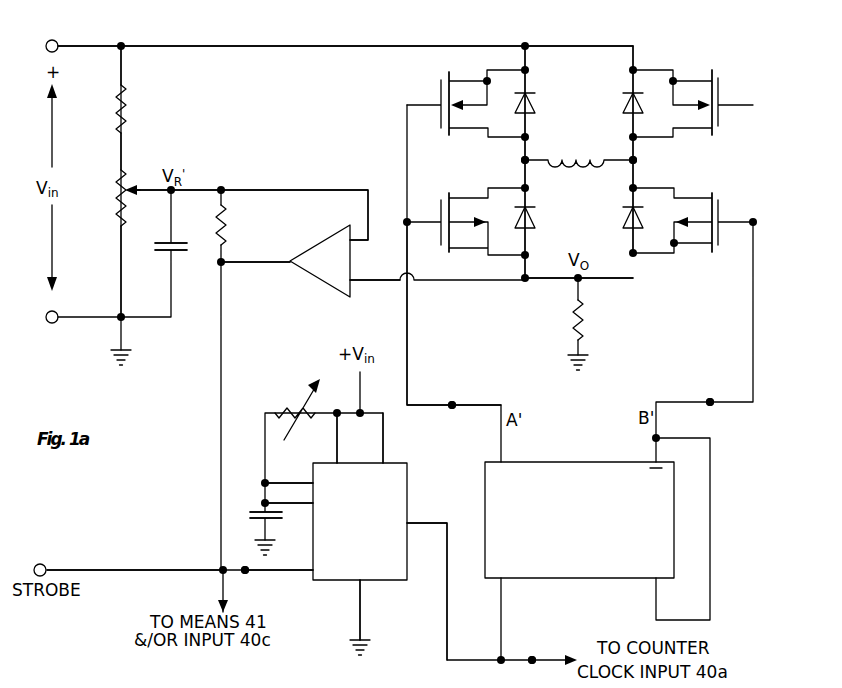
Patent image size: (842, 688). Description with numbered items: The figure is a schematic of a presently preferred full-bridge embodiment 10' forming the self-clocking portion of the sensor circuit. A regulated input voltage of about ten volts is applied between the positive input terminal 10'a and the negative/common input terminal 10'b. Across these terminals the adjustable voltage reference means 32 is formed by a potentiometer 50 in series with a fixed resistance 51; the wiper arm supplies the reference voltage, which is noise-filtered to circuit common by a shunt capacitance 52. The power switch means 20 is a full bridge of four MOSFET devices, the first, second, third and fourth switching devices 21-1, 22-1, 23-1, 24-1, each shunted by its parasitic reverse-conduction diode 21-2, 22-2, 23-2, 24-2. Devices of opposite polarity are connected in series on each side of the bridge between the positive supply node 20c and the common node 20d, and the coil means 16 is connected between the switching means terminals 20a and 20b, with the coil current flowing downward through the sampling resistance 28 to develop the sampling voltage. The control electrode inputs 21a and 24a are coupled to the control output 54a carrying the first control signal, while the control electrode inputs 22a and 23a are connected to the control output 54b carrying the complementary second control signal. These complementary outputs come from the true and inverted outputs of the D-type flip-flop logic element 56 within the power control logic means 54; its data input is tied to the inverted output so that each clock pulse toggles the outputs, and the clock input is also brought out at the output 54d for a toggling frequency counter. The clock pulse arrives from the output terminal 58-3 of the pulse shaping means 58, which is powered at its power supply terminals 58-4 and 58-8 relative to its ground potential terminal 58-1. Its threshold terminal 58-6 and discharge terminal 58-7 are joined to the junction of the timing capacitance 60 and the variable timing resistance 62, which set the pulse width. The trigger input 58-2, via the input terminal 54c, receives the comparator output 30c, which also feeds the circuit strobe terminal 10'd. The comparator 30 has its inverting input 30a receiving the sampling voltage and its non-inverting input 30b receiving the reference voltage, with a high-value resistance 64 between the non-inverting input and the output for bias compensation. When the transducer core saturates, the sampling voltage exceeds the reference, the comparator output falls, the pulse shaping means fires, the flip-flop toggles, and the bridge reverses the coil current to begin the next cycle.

The positive input terminal 10'a is at (39, 32).
The negative/common input terminal 10'b is at (52, 333).
The circuit strobe terminal 10'd is at (38, 550).
The full-bridge embodiment 10' is at (134, 527).
The fixed resistance 51 is at (125, 101).
The potentiometer 50 is at (114, 205).
The shunt capacitance 52 is at (175, 254).
The high-value resistance 64 is at (223, 227).
The adjustable voltage reference means 32 is at (162, 140).
The comparator 30 is at (320, 276).
The inverting input 30a is at (370, 286).
The non-inverting input 30b is at (365, 192).
The comparator output 30c is at (266, 265).
The power switch means 20 is at (362, 144).
The switching means terminal 20a is at (522, 160).
The switching means terminal 20b is at (638, 160).
The bridge positive supply node 20c is at (524, 44).
The bridge common node 20d is at (524, 282).
The coil means 16 is at (582, 152).
The control electrode input 21a is at (406, 104).
The first switching device 21-1 is at (448, 72).
The reverse-conduction diode 21-2 is at (538, 96).
The third switching device 23-1 is at (712, 70).
The reverse-conduction diode 23-2 is at (624, 103).
The control electrode input 23a is at (756, 104).
The second switching device 22-1 is at (708, 196).
The reverse-conduction diode 22-2 is at (624, 224).
The control electrode input 22a is at (720, 236).
The control electrode input 24a is at (424, 222).
The fourth switching device 24-1 is at (462, 200).
The reverse-conduction diode 24-2 is at (536, 220).
The sampling resistance 28 is at (586, 313).
The power control logic means 54 is at (204, 518).
The control output 54a is at (452, 402).
The control output 54b is at (708, 400).
The power control logic means input terminal 54c is at (245, 574).
The power control logic means output 54d is at (534, 658).
The D-type flip-flop logic element 56 is at (584, 462).
The pulse shaping means 58 is at (408, 478).
The ground potential terminal 58-1 is at (362, 614).
The trigger input 58-2 is at (266, 570).
The output terminal 58-3 is at (426, 524).
The power supply terminal 58-4 is at (330, 445).
The threshold terminal 58-6 is at (286, 482).
The discharge terminal 58-7 is at (300, 504).
The power supply terminal 58-8 is at (386, 431).
The timing capacitance 60 is at (246, 502).
The variable timing resistance 62 is at (280, 406).